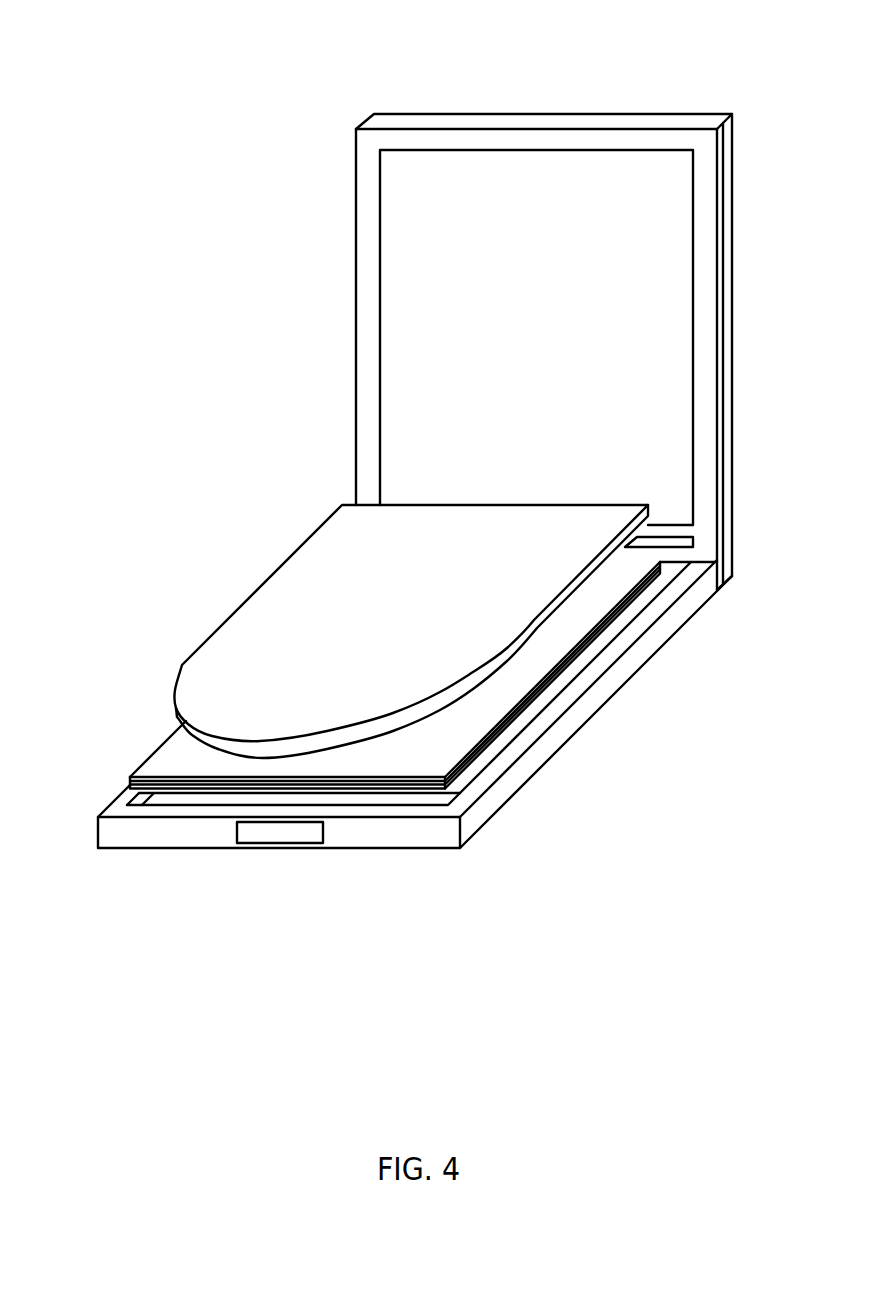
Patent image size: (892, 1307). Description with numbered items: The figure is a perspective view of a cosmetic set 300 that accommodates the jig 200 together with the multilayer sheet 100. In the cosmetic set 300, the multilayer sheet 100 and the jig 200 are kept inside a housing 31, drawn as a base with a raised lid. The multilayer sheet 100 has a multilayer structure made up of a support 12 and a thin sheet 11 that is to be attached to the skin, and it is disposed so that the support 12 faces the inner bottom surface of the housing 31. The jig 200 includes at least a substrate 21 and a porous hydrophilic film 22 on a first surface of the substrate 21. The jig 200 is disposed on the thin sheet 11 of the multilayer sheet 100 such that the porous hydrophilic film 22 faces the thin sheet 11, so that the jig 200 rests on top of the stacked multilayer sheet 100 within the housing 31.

The cosmetic set 300 is at (527, 52).
The housing 31 is at (518, 768).
The multilayer sheet 100 is at (452, 675).
The thin sheet 11 is at (563, 638).
The support 12 is at (563, 667).
The jig 200 is at (416, 705).
The substrate 21 is at (367, 733).
The porous hydrophilic film 22 is at (471, 688).